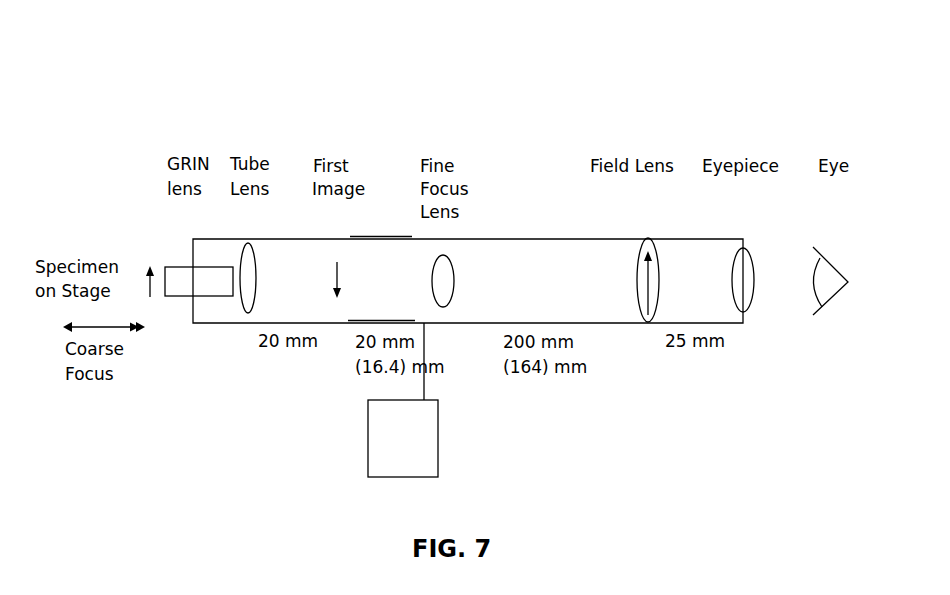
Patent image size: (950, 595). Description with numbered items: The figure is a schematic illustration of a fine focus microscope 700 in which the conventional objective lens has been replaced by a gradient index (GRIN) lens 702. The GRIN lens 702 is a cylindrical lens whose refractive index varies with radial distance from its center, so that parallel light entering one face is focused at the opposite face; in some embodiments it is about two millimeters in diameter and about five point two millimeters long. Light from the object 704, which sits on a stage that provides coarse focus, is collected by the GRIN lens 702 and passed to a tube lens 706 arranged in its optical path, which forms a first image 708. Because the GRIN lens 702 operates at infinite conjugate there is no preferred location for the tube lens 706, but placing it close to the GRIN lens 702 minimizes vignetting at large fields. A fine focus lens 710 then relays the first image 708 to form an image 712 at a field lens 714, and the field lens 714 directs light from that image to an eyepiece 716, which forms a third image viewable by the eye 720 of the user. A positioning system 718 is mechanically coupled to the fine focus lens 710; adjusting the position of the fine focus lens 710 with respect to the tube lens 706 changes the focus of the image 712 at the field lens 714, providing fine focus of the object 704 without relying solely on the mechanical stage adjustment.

The fine focus microscope 700 is at (585, 113).
The GRIN lens 702 is at (173, 293).
The object 704 is at (148, 272).
The tube lens 706 is at (252, 258).
The first image 708 is at (337, 300).
The fine focus lens 710 is at (443, 307).
The image 712 is at (640, 285).
The field lens 714 is at (650, 323).
The eyepiece 716 is at (747, 312).
The positioning system 718 is at (438, 432).
The eye 720 is at (822, 307).